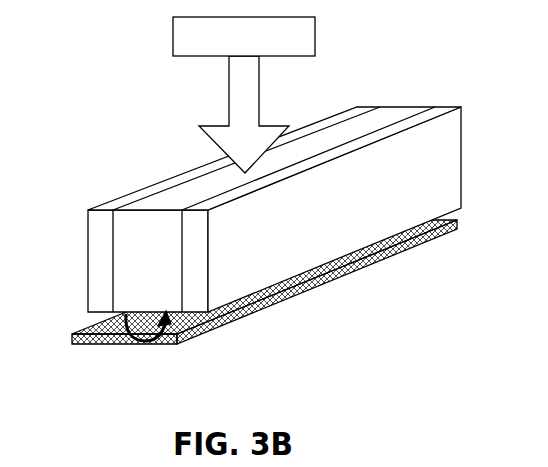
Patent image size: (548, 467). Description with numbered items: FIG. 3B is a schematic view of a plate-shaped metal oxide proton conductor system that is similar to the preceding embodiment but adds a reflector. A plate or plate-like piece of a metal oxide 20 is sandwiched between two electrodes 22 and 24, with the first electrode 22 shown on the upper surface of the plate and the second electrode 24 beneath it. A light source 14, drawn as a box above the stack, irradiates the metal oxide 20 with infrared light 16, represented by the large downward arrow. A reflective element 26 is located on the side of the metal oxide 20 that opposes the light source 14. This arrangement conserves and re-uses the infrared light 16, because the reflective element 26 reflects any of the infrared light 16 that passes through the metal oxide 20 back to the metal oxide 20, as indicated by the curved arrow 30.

The light source 14 is at (192, 57).
The infrared light 16 is at (259, 103).
The metal oxide 20 is at (131, 256).
The electrode 22 is at (178, 175).
The electrode 24 is at (278, 261).
The reflective element 26 is at (78, 345).
The arrow 30 is at (158, 342).